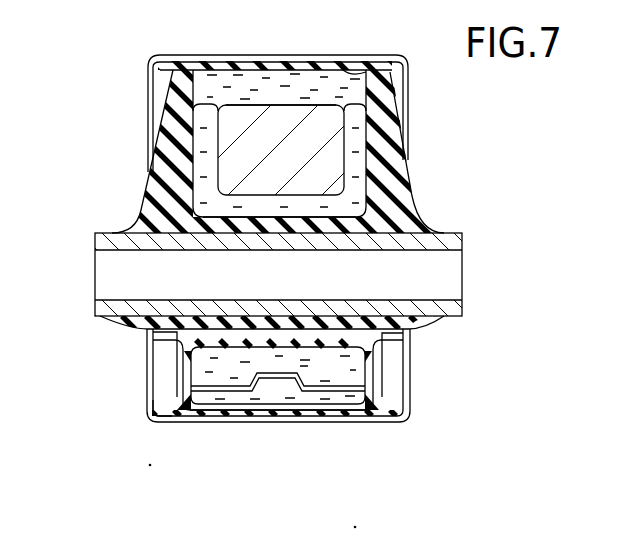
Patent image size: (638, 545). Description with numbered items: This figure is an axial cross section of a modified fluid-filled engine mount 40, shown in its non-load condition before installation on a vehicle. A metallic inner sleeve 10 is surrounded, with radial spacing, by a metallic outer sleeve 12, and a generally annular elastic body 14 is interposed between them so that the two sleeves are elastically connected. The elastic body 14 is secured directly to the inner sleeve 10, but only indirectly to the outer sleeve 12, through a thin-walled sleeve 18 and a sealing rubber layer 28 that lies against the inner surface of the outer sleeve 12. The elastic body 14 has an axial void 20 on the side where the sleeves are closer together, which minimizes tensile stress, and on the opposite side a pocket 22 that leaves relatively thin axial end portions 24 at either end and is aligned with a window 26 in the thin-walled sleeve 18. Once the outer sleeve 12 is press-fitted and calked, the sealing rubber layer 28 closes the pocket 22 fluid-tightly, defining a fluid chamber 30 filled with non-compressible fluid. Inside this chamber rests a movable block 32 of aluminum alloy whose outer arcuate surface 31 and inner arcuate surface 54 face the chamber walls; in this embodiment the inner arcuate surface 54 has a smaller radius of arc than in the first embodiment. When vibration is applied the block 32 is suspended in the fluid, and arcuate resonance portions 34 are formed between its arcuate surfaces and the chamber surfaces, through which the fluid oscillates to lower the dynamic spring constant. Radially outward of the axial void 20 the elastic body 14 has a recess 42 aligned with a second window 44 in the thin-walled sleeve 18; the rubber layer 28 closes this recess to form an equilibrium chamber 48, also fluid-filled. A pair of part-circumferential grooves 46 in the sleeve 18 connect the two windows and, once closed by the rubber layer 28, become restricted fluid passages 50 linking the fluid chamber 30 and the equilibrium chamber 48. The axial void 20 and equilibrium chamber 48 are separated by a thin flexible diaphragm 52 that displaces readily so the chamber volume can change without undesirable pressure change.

The inner sleeve 10 is at (100, 308).
The outer sleeve 12 is at (222, 421).
The elastic body 14 is at (138, 180).
The thin-walled sleeve 18 is at (161, 415).
The axial void 20 is at (352, 335).
The pocket 22 is at (203, 158).
The axial end portion 24 is at (178, 105).
The window 26 is at (352, 70).
The sealing rubber layer 28 is at (320, 415).
The fluid chamber 30 is at (358, 165).
The outer arcuate surface 31 is at (305, 102).
The movable block 32 is at (320, 137).
The arcuate resonance portion 34 is at (262, 80).
The engine mount 40 is at (412, 458).
The recess 42 is at (194, 380).
The window 44 is at (350, 413).
The part-circumferential groove 46 is at (263, 394).
The equilibrium chamber 48 is at (354, 375).
The restricted fluid passage 50 is at (282, 381).
The flexible diaphragm 52 is at (180, 340).
The inner arcuate surface 54 is at (267, 200).